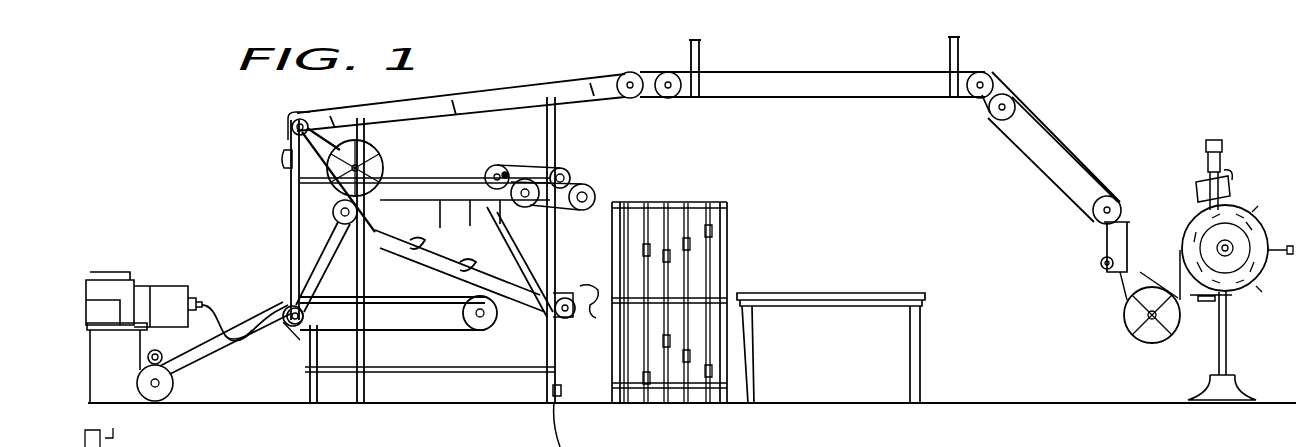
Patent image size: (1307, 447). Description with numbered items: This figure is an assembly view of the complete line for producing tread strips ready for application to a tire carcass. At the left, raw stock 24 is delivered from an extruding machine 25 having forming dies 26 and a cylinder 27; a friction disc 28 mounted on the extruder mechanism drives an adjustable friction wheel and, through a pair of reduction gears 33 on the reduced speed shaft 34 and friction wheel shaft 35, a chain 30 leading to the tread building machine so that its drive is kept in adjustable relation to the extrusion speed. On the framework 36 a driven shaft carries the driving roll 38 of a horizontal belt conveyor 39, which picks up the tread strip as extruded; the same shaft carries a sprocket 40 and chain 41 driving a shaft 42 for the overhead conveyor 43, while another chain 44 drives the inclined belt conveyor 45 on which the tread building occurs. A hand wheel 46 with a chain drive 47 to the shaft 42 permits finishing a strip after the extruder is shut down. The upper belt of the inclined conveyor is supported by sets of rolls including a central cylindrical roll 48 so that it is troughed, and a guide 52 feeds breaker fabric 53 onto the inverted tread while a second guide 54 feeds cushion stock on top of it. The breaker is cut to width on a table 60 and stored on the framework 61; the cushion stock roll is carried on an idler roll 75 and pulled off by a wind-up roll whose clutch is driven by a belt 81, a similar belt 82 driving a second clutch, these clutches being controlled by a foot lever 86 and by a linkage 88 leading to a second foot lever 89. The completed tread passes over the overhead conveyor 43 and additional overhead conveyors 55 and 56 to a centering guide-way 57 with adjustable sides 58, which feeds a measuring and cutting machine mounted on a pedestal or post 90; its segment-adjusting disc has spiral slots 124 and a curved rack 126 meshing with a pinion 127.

The raw stock 24 is at (228, 322).
The extruding machine 25 is at (106, 305).
The forming dies 26 is at (200, 302).
The cylinder 27 is at (160, 300).
The friction disc 28 is at (140, 345).
The chain 30 is at (250, 322).
The reduction gears 33 is at (205, 366).
The reduced speed shaft 34 is at (175, 384).
The friction wheel shaft 35 is at (163, 356).
The framework 36 is at (555, 160).
The driving roll 38 is at (302, 312).
The horizontal belt conveyor 39 is at (392, 296).
The sprocket 40 is at (292, 326).
The chain 41 is at (290, 216).
The shaft 42 is at (298, 118).
The overhead conveyor 43 is at (525, 90).
The chain 44 is at (338, 224).
The inclined belt conveyor 45 is at (432, 262).
The hand wheel 46 is at (383, 160).
The chain drive 47 is at (284, 158).
The central cylindrical roll 48 is at (486, 330).
The guide 52 is at (566, 292).
The breaker fabric 53 is at (586, 290).
The second guide 54 is at (455, 280).
The overhead conveyor 55 is at (820, 73).
The overhead conveyor 56 is at (1072, 146).
The centering guide-way 57 is at (1100, 262).
The adjustable sides 58 is at (1127, 250).
The table 60 is at (857, 295).
The framework 61 is at (730, 278).
The idler roll 75 is at (500, 176).
The belt 81 is at (568, 172).
The belt 82 is at (506, 170).
The foot lever 86 is at (562, 390).
The linkage 88 is at (558, 348).
The second foot lever 89 is at (569, 425).
The pedestal or post 90 is at (1228, 336).
The inclined or spiral slots 124 is at (1250, 238).
The curved rack 126 is at (1228, 246).
The pinion 127 is at (1240, 234).